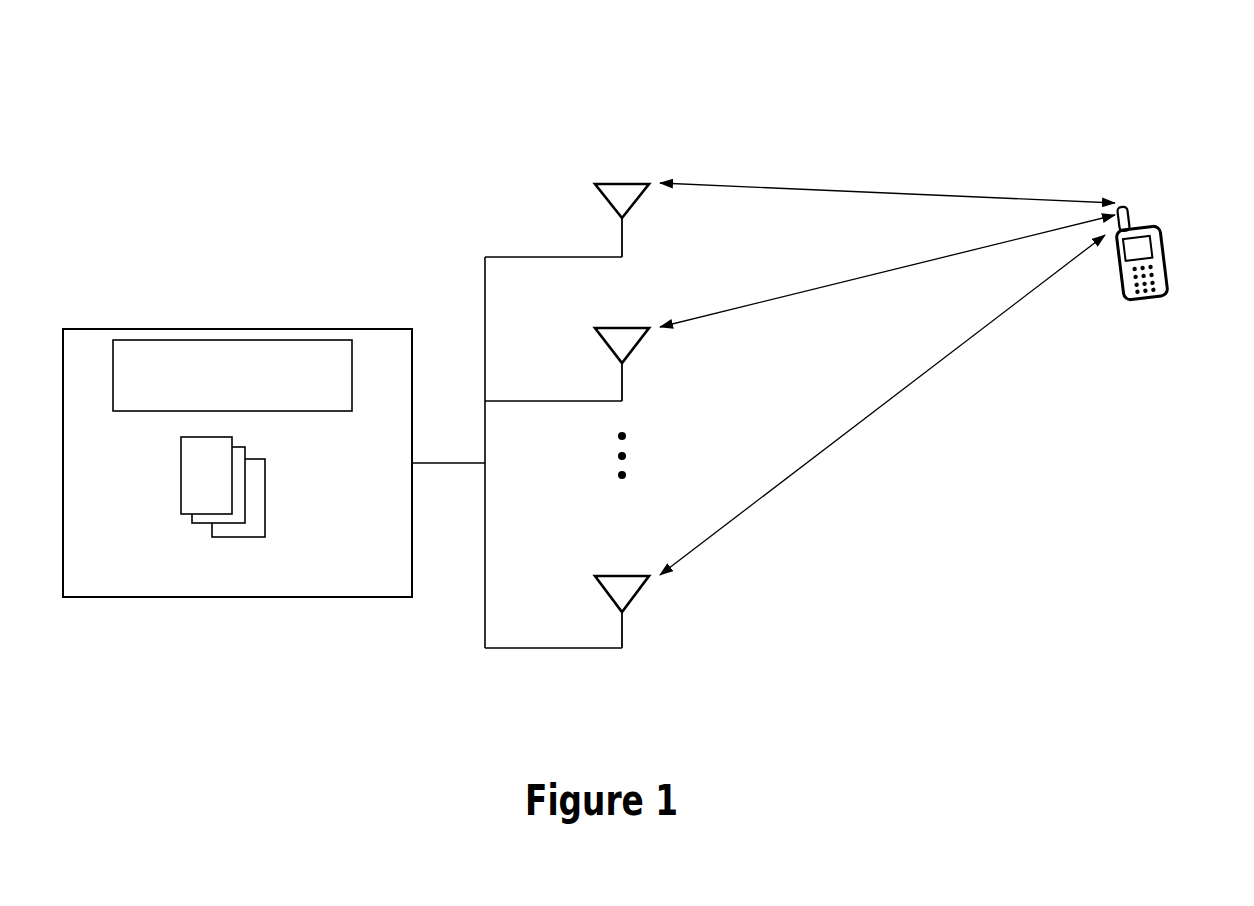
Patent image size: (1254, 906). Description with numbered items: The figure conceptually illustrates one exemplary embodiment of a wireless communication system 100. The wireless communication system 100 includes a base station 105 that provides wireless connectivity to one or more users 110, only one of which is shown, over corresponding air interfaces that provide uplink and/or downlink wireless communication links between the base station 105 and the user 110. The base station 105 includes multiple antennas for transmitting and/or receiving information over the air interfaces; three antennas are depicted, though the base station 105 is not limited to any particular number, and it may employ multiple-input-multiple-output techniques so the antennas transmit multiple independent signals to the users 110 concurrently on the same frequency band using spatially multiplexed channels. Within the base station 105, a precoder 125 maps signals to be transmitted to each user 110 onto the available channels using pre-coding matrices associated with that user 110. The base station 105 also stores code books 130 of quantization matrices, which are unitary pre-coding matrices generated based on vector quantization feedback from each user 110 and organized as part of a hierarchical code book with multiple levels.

The wireless communication system 100 is at (983, 83).
The base station 105 is at (372, 581).
The user 110 is at (1176, 252).
The precoder 125 is at (247, 401).
The code book 130 is at (180, 493).